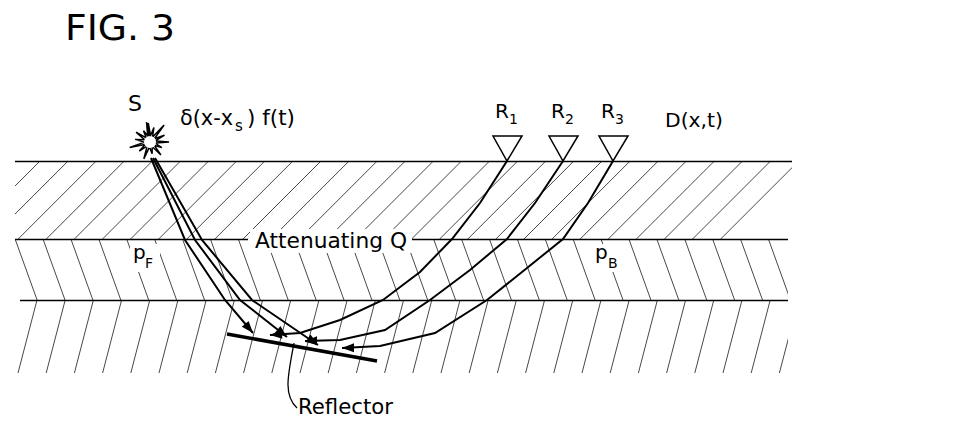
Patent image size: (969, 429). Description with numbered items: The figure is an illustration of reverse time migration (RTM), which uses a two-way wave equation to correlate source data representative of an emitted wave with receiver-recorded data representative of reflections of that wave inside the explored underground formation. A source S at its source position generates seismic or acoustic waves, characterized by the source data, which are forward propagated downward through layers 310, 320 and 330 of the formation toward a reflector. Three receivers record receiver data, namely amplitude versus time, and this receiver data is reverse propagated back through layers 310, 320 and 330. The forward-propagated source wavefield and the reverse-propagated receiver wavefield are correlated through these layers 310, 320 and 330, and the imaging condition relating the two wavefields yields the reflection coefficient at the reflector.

The layer 310 is at (745, 203).
The layer 320 is at (757, 280).
The layer 330 is at (743, 351).